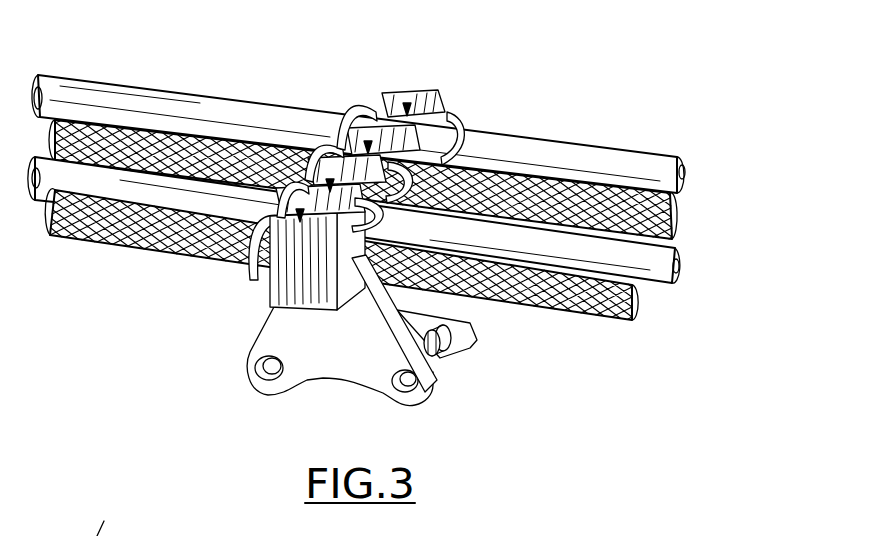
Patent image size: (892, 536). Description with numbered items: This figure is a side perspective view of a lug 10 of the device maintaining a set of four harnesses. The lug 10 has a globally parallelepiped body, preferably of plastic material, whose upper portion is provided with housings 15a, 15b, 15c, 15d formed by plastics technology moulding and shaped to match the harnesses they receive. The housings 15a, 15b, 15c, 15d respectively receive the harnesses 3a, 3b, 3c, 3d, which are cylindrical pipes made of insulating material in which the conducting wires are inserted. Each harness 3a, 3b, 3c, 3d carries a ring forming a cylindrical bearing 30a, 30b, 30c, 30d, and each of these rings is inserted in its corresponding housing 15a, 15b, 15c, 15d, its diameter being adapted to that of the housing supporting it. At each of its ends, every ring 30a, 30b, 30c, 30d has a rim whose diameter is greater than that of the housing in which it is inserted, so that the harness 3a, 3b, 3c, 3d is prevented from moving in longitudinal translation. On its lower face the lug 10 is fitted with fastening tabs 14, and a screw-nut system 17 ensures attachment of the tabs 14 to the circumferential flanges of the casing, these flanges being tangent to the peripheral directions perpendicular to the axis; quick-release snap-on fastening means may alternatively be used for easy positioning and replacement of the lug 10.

The harness 3a is at (610, 303).
The harness 3b is at (648, 265).
The harness 3c is at (653, 210).
The harness 3d is at (630, 170).
The lug 10 is at (347, 228).
The fastening tab 14 is at (333, 340).
The housing 15a is at (272, 185).
The housing 15b is at (328, 175).
The housing 15c is at (370, 138).
The housing 15d is at (420, 108).
The screw-nut system 17 is at (443, 360).
The ring forming a cylindrical bearing 30a is at (247, 267).
The ring forming a cylindrical bearing 30b is at (160, 260).
The ring forming a cylindrical bearing 30c is at (393, 163).
The ring forming a cylindrical bearing 30d is at (423, 128).